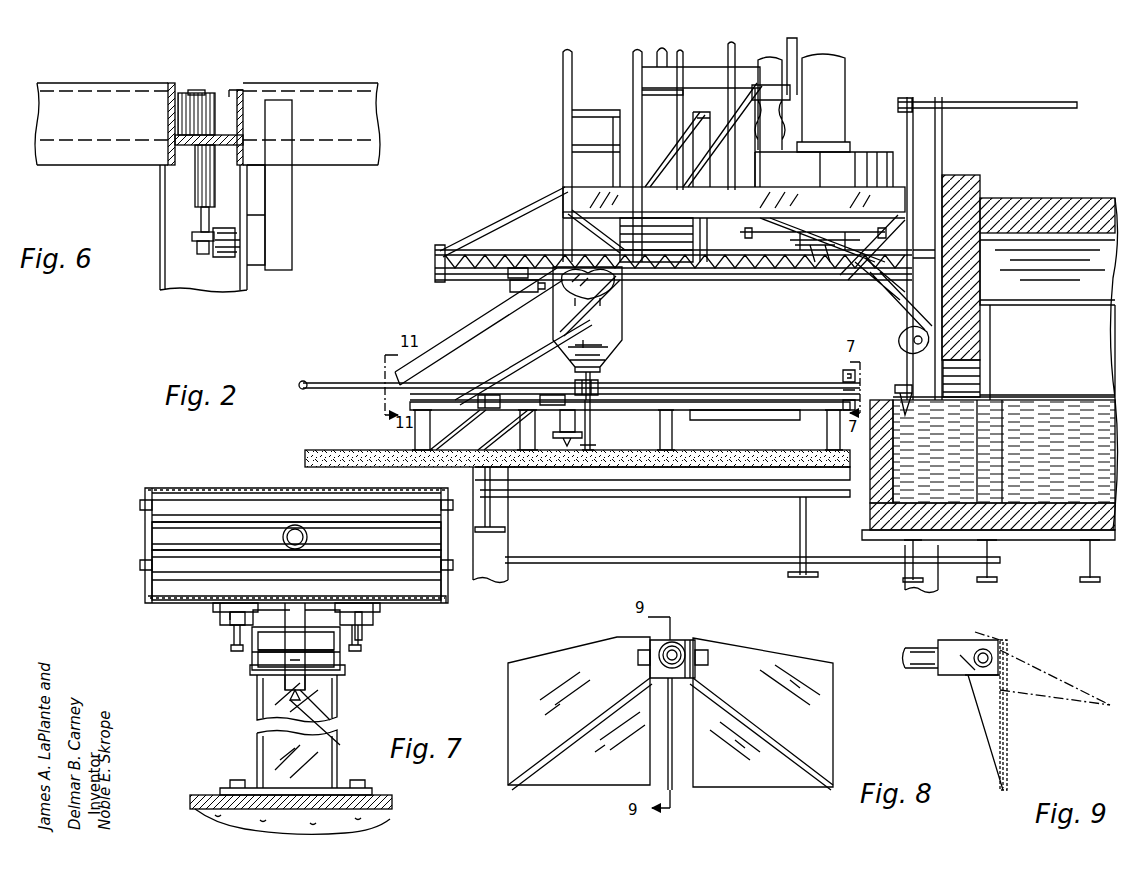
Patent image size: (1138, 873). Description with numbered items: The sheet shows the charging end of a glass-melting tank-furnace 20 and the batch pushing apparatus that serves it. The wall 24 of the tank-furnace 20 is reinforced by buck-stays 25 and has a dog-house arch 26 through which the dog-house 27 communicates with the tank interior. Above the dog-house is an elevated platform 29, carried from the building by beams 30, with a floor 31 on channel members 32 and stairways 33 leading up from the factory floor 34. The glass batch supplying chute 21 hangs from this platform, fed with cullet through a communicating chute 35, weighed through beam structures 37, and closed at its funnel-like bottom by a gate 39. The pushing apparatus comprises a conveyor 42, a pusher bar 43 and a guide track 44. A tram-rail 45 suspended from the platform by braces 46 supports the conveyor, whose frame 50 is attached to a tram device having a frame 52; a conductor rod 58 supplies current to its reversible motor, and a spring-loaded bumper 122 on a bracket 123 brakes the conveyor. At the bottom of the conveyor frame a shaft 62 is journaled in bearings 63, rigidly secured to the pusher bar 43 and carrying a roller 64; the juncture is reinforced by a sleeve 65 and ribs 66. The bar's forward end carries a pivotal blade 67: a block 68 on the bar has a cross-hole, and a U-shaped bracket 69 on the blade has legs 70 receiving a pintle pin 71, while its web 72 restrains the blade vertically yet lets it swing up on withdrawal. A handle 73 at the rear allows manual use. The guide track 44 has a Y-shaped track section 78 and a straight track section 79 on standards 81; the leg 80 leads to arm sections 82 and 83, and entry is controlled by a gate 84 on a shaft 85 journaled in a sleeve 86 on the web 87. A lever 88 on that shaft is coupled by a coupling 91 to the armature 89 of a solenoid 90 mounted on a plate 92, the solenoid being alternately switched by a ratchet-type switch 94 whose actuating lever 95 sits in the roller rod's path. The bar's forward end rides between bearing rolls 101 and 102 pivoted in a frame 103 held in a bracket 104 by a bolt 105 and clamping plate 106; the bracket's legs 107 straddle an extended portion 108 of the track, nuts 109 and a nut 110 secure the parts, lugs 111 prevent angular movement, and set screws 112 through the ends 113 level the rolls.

In FIG. 2, the glass-melting tank-furnace 20 is at (1018, 192).
In FIG. 2, the glass batch supplying chute 21 is at (868, 287).
In FIG. 2, the wall 24 is at (960, 330).
In FIG. 2, the buck-stays 25 is at (917, 163).
In FIG. 2, the dog-house arch 26 is at (962, 365).
In FIG. 2, the dog-house 27 is at (903, 450).
In FIG. 2, the platform 29 is at (558, 148).
In FIG. 2, the beams 30 is at (563, 75).
In FIG. 2, the floor 31 is at (775, 187).
In FIG. 2, the channel members 32 is at (840, 200).
In FIG. 2, the stairways 33 is at (490, 318).
In FIG. 2, the factory floor 34 is at (318, 450).
In FIG. 7, the factory floor 34 is at (380, 798).
In FIG. 2, the communicating chute 35 is at (820, 92).
In FIG. 2, the beam structures 37 is at (772, 240).
In FIG. 2, the gate 39 is at (895, 338).
In FIG. 2, the conveyor 42 is at (630, 338).
In FIG. 2, the pusher bar 43 is at (715, 388).
In FIG. 7, the pusher bar 43 is at (309, 537).
In FIG. 8, the pusher bar 43 is at (650, 648).
In FIG. 9, the pusher bar 43 is at (920, 645).
In FIG. 6, the guide track 44 is at (128, 80).
In FIG. 2, the guide track 44 is at (743, 416).
In FIG. 2, the tram-rail 45 is at (438, 270).
In FIG. 2, the braces 46 is at (484, 232).
In FIG. 2, the conveyor frame 50 is at (622, 330).
In FIG. 2, the tram device frame 52 is at (616, 293).
In FIG. 2, the conductor rod 58 is at (805, 262).
In FIG. 2, the shaft 62 is at (610, 345).
In FIG. 2, the bearings 63 is at (624, 366).
In FIG. 2, the roller 64 is at (600, 420).
In FIG. 2, the sleeve 65 is at (600, 388).
In FIG. 2, the ribs 66 is at (552, 395).
In FIG. 2, the blade 67 is at (900, 386).
In FIG. 8, the blade 67 is at (760, 675).
In FIG. 9, the blade 67 is at (1008, 722).
In FIG. 8, the block 68 is at (682, 640).
In FIG. 9, the block 68 is at (958, 645).
In FIG. 9, the U-shaped bracket 69 is at (966, 682).
In FIG. 8, the legs 70 is at (648, 665).
In FIG. 8, the pintle pin 71 is at (700, 650).
In FIG. 9, the pintle pin 71 is at (988, 652).
In FIG. 8, the web 72 is at (676, 680).
In FIG. 9, the web 72 is at (975, 690).
In FIG. 2, the handle 73 is at (306, 381).
In FIG. 6, the Y-shaped track section 78 is at (160, 150).
In FIG. 2, the Y-shaped track section 78 is at (510, 410).
In FIG. 2, the straight track section 79 is at (762, 418).
In FIG. 6, the leg 80 is at (168, 108).
In FIG. 2, the standards 81 is at (675, 437).
In FIG. 7, the standards 81 is at (325, 702).
In FIG. 6, the arm section 82 is at (85, 152).
In FIG. 6, the arm section 83 is at (330, 152).
In FIG. 6, the gate 84 is at (195, 100).
In FIG. 2, the gate 84 is at (556, 422).
In FIG. 6, the shaft 85 is at (201, 222).
In FIG. 6, the sleeve 86 is at (200, 188).
In FIG. 6, the web 87 is at (242, 100).
In FIG. 6, the lever 88 is at (202, 254).
In FIG. 2, the lever 88 is at (560, 438).
In FIG. 6, the armature 89 is at (233, 258).
In FIG. 6, the solenoid 90 is at (258, 250).
In FIG. 6, the coupling 91 is at (224, 260).
In FIG. 6, the plate 92 is at (280, 228).
In FIG. 2, the ratchet-type switch 94 is at (458, 430).
In FIG. 2, the actuating lever 95 is at (490, 395).
In FIG. 2, the bearing roll 101 is at (843, 376).
In FIG. 7, the bearing roll 101 is at (262, 508).
In FIG. 2, the bearing roll 102 is at (843, 408).
In FIG. 7, the bearing roll 102 is at (366, 565).
In FIG. 2, the frame 103 is at (846, 368).
In FIG. 7, the frame 103 is at (160, 540).
In FIG. 7, the bracket 104 is at (252, 650).
In FIG. 7, the bolt 105 is at (332, 722).
In FIG. 7, the clamping plate 106 is at (330, 672).
In FIG. 7, the legs 107 is at (258, 650).
In FIG. 7, the extended portion 108 is at (285, 680).
In FIG. 7, the nuts 109 is at (362, 630).
In FIG. 7, the nut 110 is at (373, 608).
In FIG. 7, the lugs 111 is at (220, 608).
In FIG. 7, the set screws 112 is at (232, 638).
In FIG. 7, the ends 113 is at (232, 618).
In FIG. 2, the spring-loaded bumper 122 is at (528, 268).
In FIG. 2, the bracket 123 is at (510, 285).